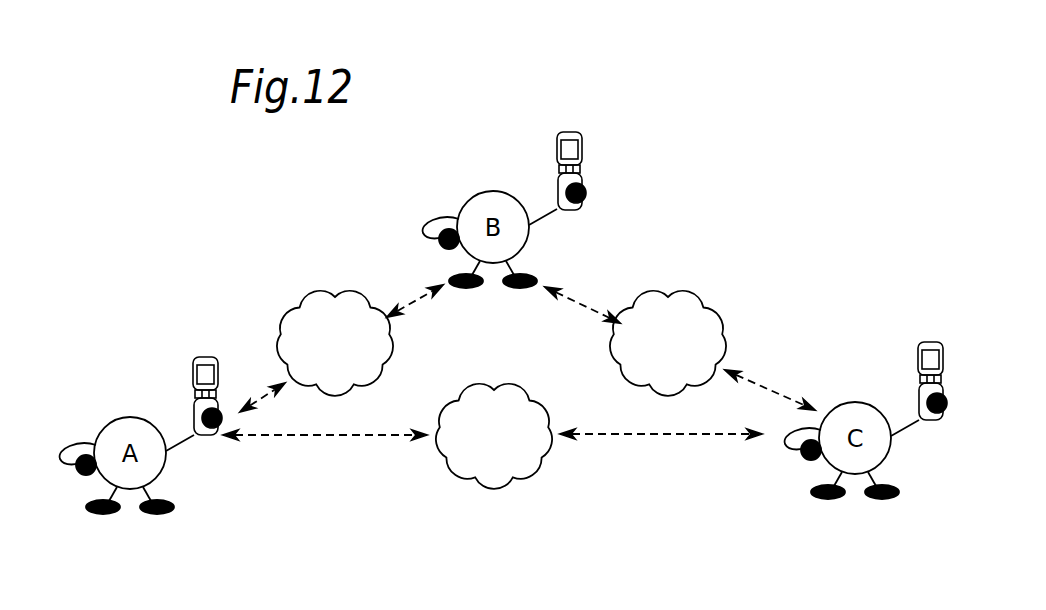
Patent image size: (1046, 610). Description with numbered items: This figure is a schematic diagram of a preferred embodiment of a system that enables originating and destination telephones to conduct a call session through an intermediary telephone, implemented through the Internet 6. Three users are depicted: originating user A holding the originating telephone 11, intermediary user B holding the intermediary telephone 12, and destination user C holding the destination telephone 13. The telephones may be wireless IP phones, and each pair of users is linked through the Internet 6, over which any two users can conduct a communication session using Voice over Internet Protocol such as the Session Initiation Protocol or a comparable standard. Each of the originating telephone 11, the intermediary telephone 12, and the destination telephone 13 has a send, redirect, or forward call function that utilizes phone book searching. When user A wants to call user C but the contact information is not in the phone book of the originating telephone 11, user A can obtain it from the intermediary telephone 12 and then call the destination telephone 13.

The Internet 6 is at (335, 287).
The originating telephone 11 is at (207, 358).
The intermediary telephone 12 is at (573, 136).
The destination telephone 13 is at (932, 344).